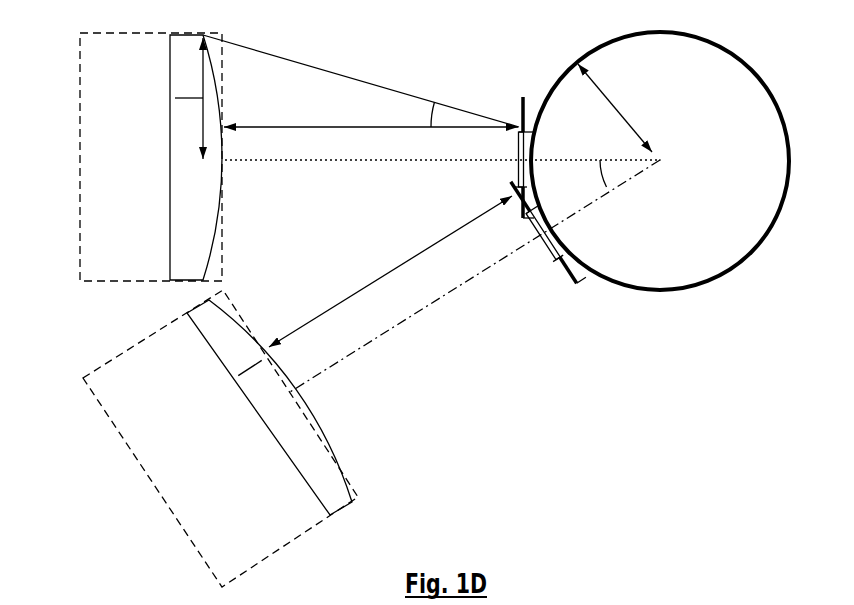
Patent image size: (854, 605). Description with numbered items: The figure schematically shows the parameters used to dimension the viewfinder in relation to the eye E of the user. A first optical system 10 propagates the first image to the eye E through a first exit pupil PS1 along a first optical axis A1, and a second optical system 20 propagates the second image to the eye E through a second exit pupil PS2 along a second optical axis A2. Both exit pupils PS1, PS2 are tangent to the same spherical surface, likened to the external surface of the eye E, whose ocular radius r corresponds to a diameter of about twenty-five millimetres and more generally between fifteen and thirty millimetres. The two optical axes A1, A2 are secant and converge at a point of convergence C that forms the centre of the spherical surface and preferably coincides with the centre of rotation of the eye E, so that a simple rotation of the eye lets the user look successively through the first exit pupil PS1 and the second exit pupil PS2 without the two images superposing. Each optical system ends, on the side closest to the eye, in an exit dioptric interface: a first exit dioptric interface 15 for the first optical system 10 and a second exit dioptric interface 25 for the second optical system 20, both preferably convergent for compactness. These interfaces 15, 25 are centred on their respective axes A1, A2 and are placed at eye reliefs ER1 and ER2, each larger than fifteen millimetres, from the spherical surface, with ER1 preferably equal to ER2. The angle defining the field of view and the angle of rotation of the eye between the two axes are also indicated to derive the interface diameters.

The first optical system 10 is at (108, 58).
The first exit dioptric interface 15 is at (198, 215).
The second optical system 20 is at (128, 392).
The second exit dioptric interface 25 is at (268, 393).
The eye E is at (553, 82).
The point of convergence C is at (657, 152).
The ocular radius r is at (615, 108).
The first optical axis A1 is at (335, 161).
The second optical axis A2 is at (428, 308).
The first eye relief ER1 is at (371, 110).
The second eye relief ER2 is at (390, 271).
The first exit pupil PS1 is at (516, 164).
The second exit pupil PS2 is at (508, 296).